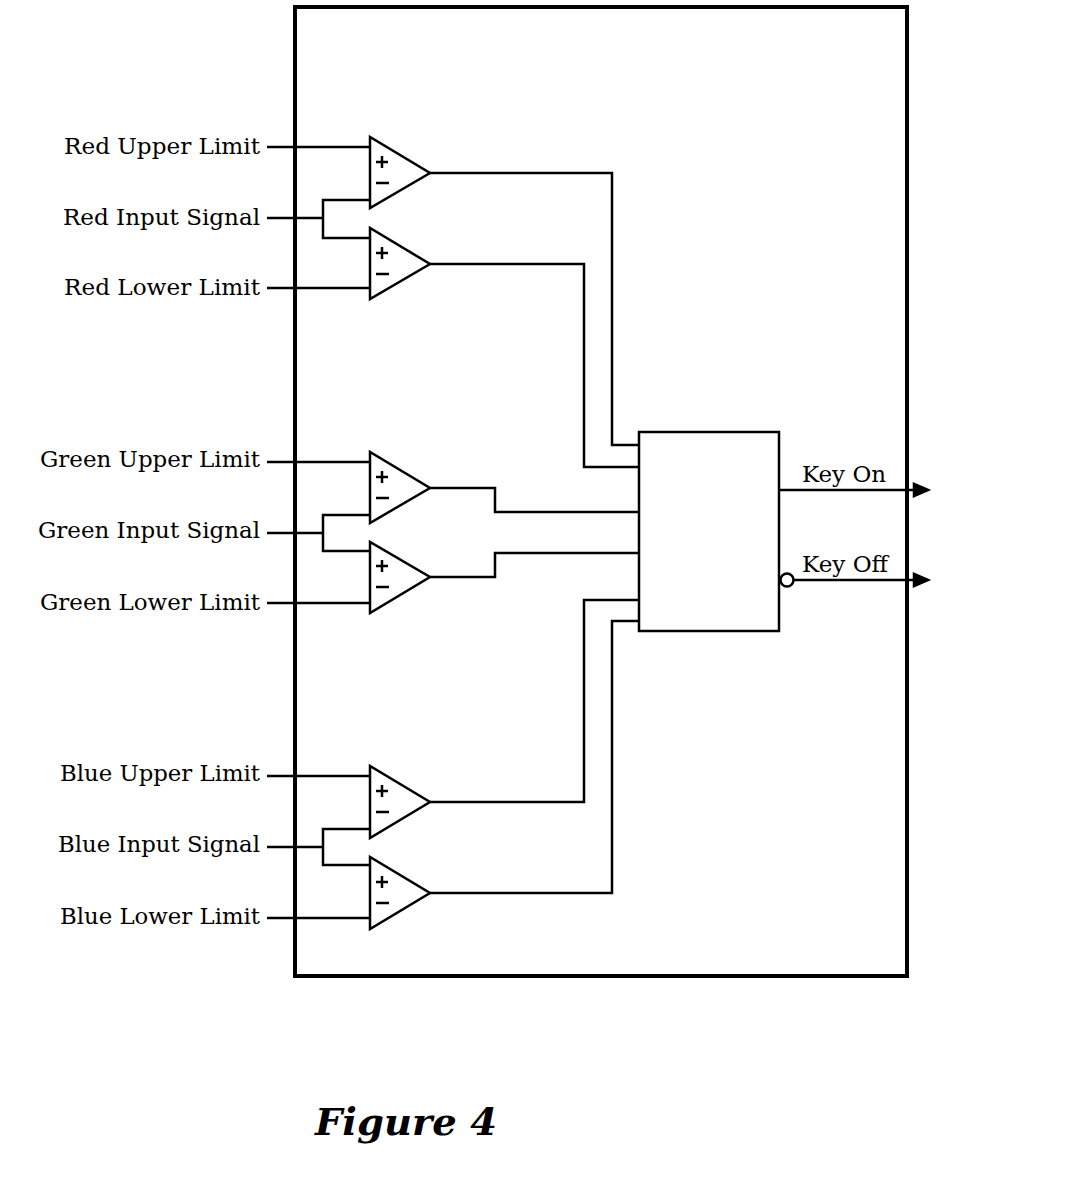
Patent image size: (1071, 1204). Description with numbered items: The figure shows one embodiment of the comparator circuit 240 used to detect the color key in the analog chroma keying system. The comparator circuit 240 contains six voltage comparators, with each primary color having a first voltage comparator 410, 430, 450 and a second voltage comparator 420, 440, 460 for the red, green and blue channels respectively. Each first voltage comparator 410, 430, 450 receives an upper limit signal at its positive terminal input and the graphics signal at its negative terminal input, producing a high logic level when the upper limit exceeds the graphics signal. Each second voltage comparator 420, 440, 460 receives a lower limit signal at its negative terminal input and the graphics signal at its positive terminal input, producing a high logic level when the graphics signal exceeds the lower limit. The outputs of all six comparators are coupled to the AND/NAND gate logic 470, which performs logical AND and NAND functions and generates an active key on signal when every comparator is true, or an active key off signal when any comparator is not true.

The comparator circuit 240 is at (601, 491).
The first voltage comparator 410 is at (404, 147).
The second voltage comparator 420 is at (404, 238).
The first voltage comparator 430 is at (406, 462).
The second voltage comparator 440 is at (406, 551).
The first voltage comparator 450 is at (406, 776).
The second voltage comparator 460 is at (410, 867).
The AND/NAND gate logic 470 is at (708, 638).